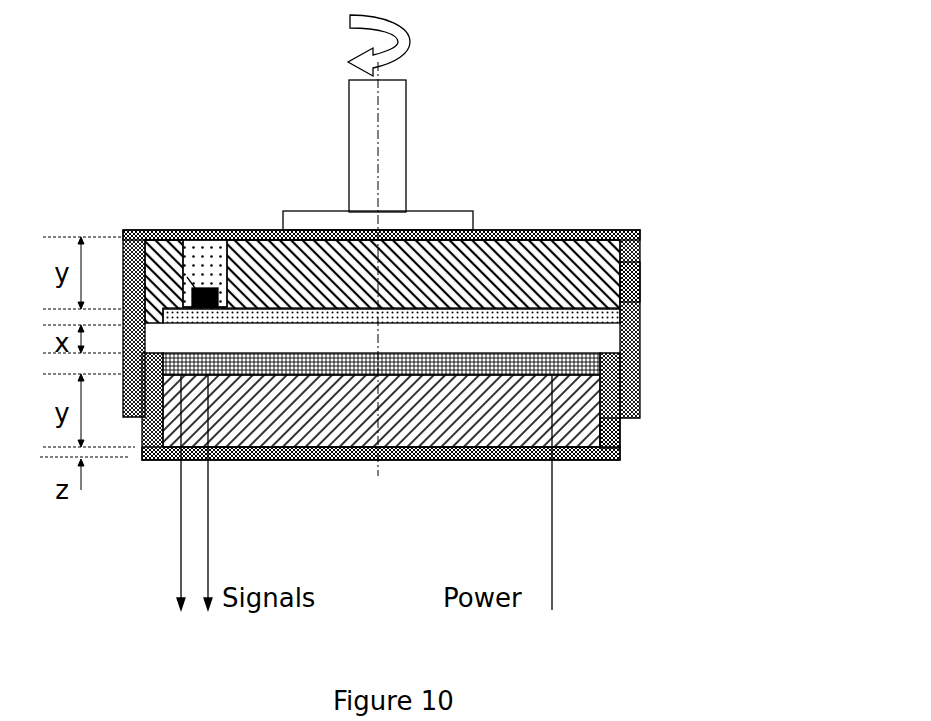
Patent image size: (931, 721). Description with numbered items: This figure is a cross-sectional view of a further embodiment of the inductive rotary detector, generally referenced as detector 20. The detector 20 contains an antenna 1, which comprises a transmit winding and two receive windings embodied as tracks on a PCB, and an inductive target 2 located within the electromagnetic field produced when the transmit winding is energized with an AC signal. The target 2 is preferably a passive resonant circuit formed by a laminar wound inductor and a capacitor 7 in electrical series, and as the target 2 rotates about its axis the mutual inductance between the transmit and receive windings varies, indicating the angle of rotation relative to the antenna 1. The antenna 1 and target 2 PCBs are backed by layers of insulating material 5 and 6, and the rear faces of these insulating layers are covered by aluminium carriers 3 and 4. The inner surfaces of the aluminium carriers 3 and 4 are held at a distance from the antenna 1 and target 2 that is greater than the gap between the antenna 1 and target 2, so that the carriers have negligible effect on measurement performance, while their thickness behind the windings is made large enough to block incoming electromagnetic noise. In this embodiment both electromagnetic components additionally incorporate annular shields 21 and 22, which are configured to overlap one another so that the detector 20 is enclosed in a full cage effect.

The antenna 1 is at (640, 353).
The inductive target 2 is at (640, 300).
The aluminium carrier 3 is at (600, 460).
The aluminium carrier 4 is at (540, 231).
The insulating material 5 is at (560, 278).
The insulating material 6 is at (640, 409).
The capacitor 7 is at (145, 233).
The detector 20 is at (198, 212).
The annular shield 21 is at (640, 281).
The annular shield 22 is at (620, 435).